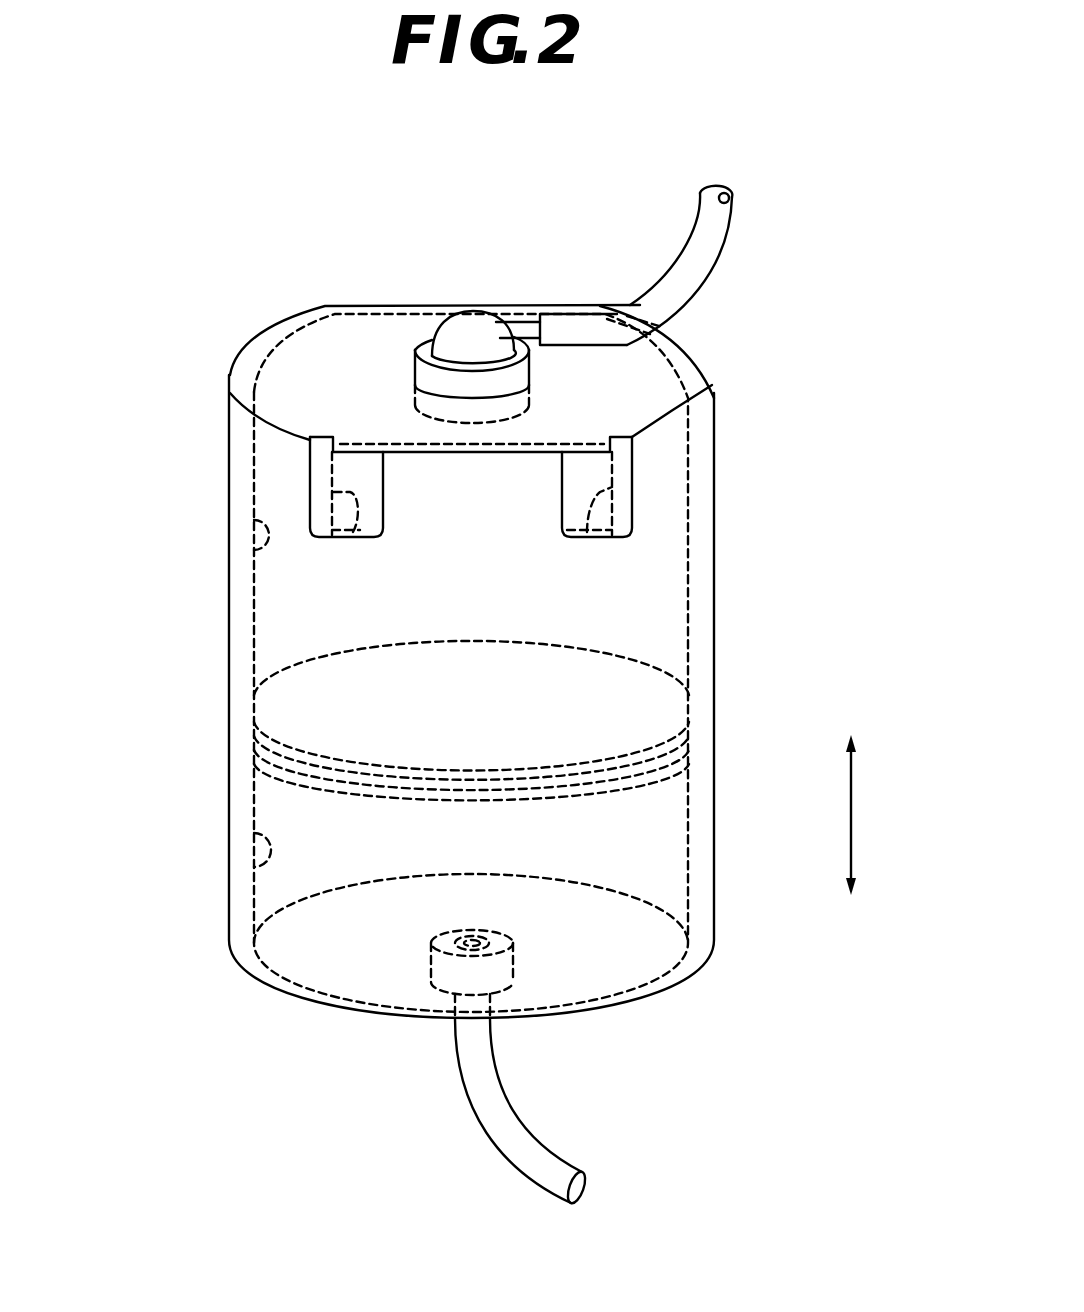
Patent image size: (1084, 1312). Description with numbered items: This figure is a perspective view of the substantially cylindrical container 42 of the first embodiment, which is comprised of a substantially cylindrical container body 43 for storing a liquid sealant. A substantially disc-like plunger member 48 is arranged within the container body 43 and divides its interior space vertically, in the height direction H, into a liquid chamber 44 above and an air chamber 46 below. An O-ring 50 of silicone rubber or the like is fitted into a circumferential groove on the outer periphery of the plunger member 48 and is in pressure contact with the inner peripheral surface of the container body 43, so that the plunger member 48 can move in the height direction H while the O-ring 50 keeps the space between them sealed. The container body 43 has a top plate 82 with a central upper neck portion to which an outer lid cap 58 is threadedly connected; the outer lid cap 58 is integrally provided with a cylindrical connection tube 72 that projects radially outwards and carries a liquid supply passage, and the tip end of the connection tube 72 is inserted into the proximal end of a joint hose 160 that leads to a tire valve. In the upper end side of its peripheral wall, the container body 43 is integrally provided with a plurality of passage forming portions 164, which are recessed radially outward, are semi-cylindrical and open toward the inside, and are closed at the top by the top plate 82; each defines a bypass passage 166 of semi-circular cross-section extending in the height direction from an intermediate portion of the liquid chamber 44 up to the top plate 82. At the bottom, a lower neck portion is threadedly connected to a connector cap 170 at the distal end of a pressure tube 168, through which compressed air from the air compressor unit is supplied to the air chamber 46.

The cylindrical container 42 is at (742, 363).
The container body 43 is at (716, 562).
The liquid chamber 44 is at (252, 550).
The air chamber 46 is at (250, 864).
The plunger member 48 is at (613, 652).
The O-ring 50 is at (302, 775).
The outer lid cap 58 is at (473, 316).
The connection tube 72 is at (523, 321).
The top plate 82 is at (401, 336).
The joint hose 160 is at (697, 234).
The passage forming portions 164 is at (340, 305).
The bypass passage 166 is at (353, 532).
The pressure tube 168 is at (470, 1117).
The connector cap 170 is at (432, 967).
The height direction H is at (851, 815).